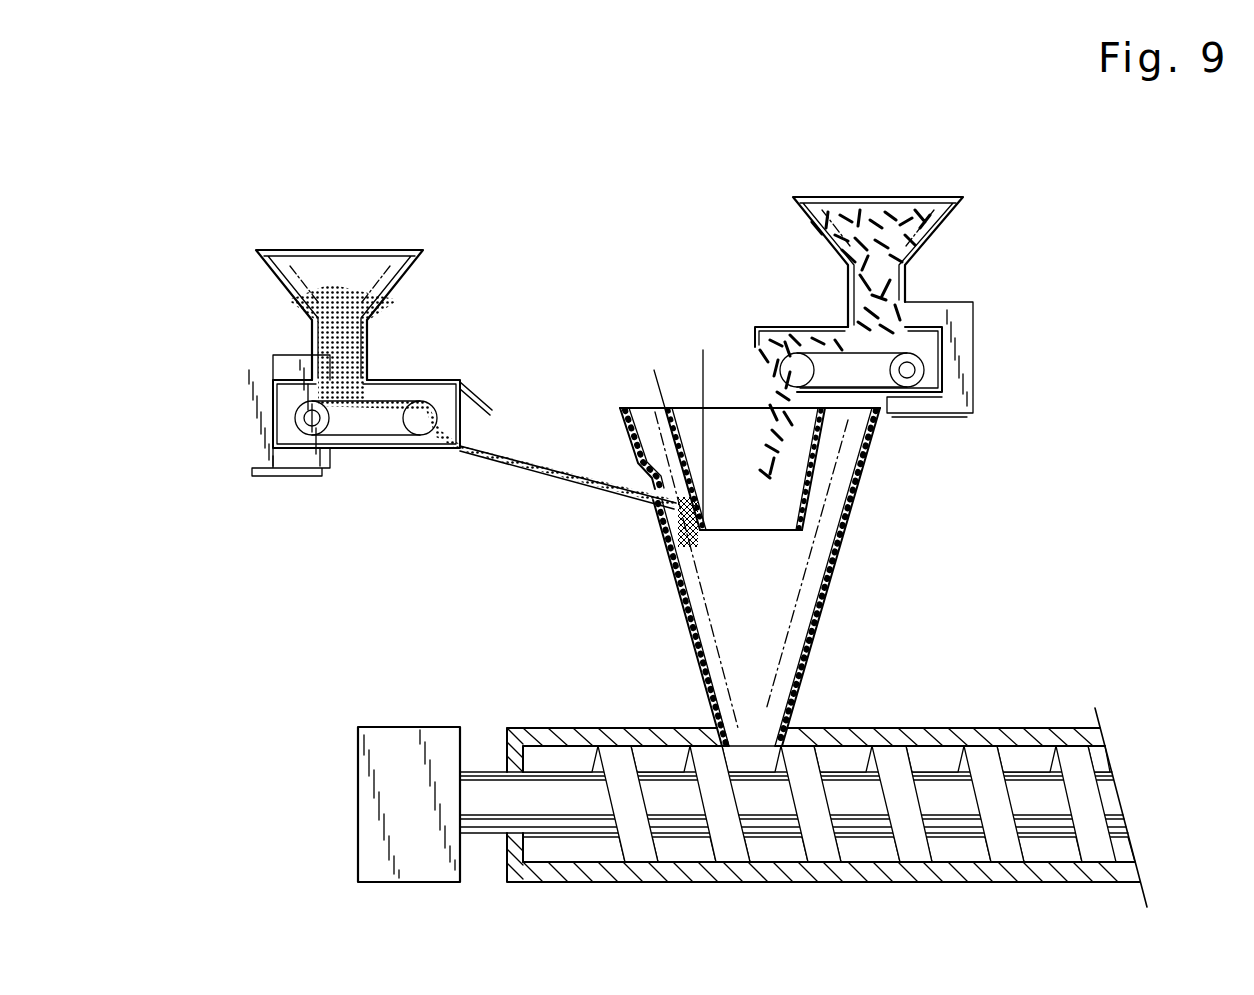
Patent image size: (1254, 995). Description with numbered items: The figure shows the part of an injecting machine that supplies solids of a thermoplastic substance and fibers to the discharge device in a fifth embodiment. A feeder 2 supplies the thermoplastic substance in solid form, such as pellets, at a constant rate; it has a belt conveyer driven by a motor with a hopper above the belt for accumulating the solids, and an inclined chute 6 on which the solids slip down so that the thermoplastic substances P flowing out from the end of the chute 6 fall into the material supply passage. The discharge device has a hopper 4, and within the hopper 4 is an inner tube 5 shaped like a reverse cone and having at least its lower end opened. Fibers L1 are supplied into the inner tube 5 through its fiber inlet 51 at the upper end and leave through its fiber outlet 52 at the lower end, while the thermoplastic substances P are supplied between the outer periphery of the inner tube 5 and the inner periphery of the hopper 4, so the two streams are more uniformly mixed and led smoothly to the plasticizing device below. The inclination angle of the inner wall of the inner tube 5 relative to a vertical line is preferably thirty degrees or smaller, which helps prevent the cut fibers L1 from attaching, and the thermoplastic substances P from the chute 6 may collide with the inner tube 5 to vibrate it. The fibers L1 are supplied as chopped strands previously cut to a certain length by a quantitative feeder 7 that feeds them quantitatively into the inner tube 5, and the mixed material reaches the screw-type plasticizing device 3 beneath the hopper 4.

The feeder 2 is at (459, 311).
The extruder 3 is at (938, 706).
The hopper 4 is at (670, 573).
The inner tube 5 is at (813, 503).
The inclined chute 6 is at (578, 482).
The quantitative feeder 7 is at (943, 365).
The fiber inlet 51 is at (735, 437).
The fiber outlet 52 is at (760, 533).
The thermoplastic substances P is at (549, 458).
The cut fibers L1 is at (883, 220).